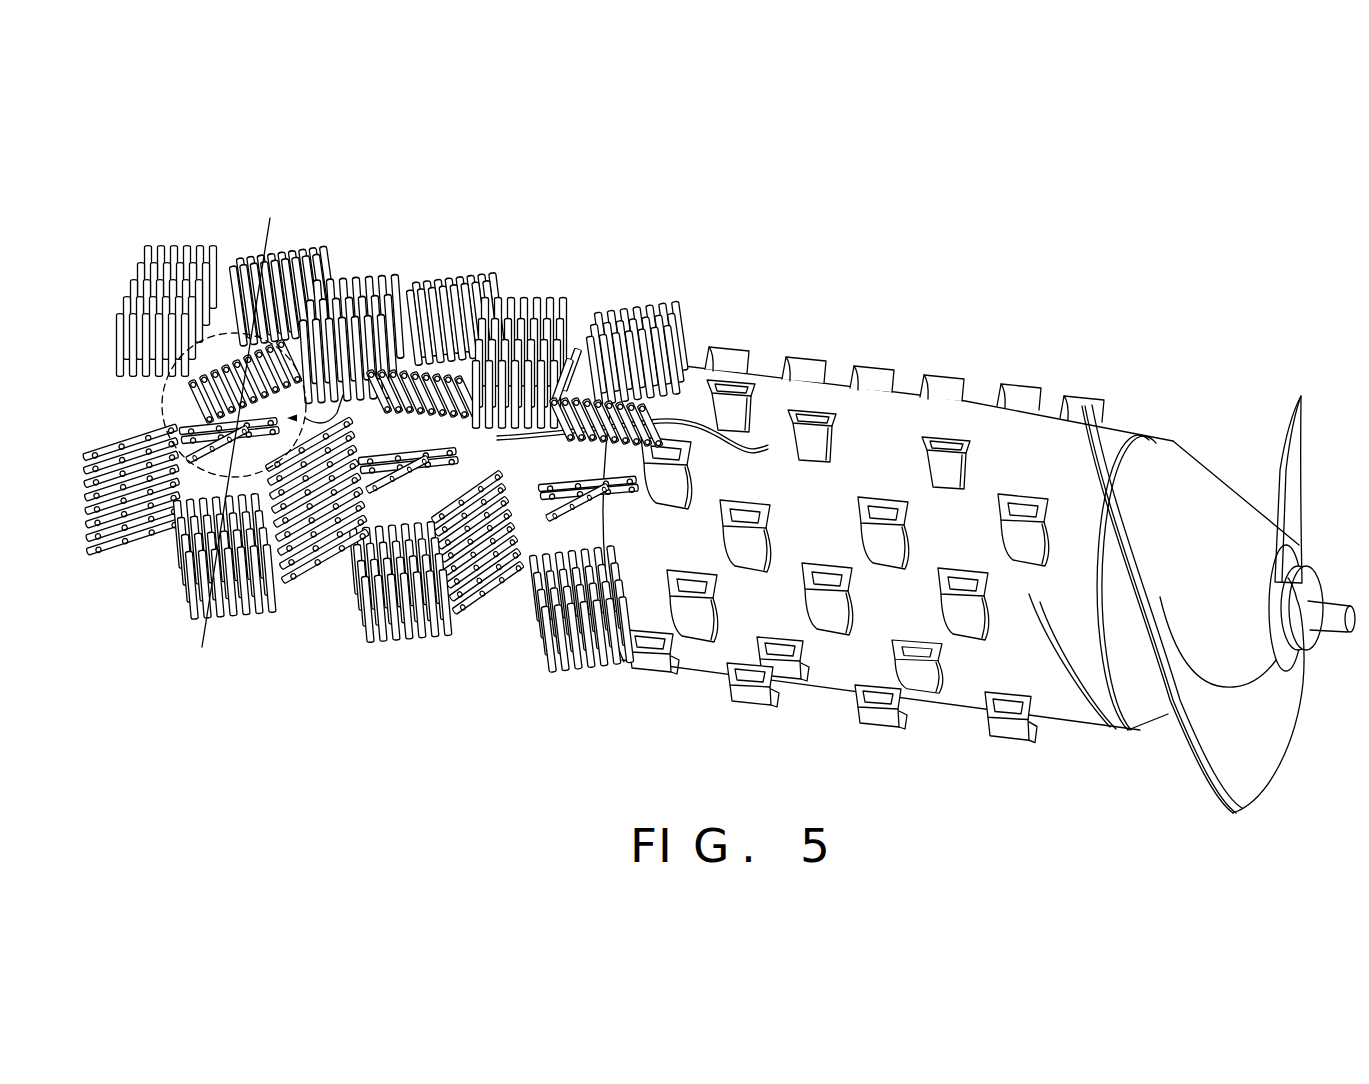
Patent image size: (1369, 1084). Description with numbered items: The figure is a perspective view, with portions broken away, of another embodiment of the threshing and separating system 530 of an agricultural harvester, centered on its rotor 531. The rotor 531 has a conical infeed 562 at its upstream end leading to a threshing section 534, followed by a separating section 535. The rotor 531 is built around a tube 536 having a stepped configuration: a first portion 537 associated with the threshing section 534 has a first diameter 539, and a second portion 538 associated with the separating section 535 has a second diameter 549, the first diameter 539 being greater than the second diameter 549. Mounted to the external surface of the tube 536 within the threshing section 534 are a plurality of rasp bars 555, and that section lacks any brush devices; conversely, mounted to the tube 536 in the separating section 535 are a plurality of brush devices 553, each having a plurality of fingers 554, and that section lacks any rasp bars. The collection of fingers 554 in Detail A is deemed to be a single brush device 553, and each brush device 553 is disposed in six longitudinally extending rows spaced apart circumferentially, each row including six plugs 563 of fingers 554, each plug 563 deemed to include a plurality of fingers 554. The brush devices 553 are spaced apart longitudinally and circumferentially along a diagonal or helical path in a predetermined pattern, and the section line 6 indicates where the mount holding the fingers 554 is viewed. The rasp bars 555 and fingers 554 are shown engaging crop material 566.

The threshing and separating system 530 is at (1218, 197).
The rotor 531 is at (1145, 335).
The threshing section 534 is at (865, 544).
The separating section 535 is at (368, 482).
The tube 536 is at (132, 390).
The first portion 537 is at (865, 544).
The second portion 538 is at (368, 482).
The first diameter 539 is at (936, 415).
The second diameter 549 is at (207, 482).
The brush device 553 is at (370, 300).
The finger 554 is at (313, 592).
The rasp bar 555 is at (918, 687).
The conical infeed 562 is at (1197, 468).
The plug 563 is at (262, 557).
The crop material 566 is at (683, 420).
The Detail A is at (163, 420).
The section line 6- 6 is at (303, 232).